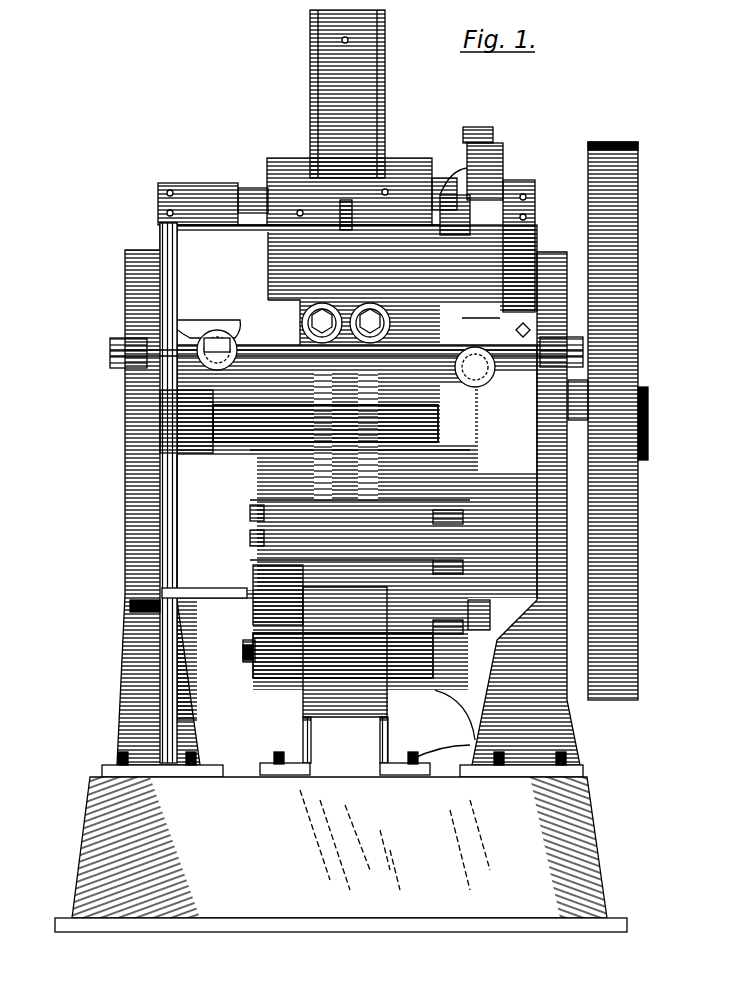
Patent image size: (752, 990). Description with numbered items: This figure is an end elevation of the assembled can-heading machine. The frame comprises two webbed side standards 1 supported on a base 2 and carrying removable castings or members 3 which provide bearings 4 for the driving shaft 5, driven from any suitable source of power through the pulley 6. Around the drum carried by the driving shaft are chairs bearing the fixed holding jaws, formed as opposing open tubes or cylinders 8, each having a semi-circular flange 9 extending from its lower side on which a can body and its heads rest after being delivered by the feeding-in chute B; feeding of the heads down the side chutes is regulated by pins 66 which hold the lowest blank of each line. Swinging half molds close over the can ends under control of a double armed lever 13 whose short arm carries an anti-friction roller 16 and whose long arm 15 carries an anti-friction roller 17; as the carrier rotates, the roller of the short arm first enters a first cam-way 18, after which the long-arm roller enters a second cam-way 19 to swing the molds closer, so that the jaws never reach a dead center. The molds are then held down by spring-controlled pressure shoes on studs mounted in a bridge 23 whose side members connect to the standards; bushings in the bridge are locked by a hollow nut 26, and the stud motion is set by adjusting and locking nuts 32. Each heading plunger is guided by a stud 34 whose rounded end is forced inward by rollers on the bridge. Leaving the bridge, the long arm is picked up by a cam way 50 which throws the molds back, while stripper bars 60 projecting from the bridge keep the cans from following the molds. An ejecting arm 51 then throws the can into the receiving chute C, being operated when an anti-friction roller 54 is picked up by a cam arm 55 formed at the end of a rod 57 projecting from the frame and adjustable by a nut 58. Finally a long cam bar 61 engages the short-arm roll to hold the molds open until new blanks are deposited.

The side standards 1 is at (122, 690).
The base 2 is at (560, 812).
The castings or members 3 is at (560, 510).
The bearings 4 is at (205, 458).
The driving shaft 5 is at (580, 382).
The pulley 6 is at (640, 178).
The tubes or cylinders 8 is at (405, 168).
The semi-circular flange 9 is at (305, 213).
The double armed lever 13 is at (416, 540).
The long arm 15 is at (425, 562).
The anti-friction roller 16 is at (462, 134).
The anti-friction roller 17 is at (424, 762).
The first cam-way 18 is at (505, 155).
The second cam-way 19 is at (520, 245).
The bridge 23 is at (248, 318).
The hollow nut 26 is at (272, 300).
The adjusting and locking nuts 32 is at (318, 305).
The stud 34 is at (262, 650).
The cam way 50 is at (545, 432).
The ejecting arm 51 is at (268, 600).
The anti-friction roller 54 is at (252, 500).
The cam arm 55 is at (258, 514).
The rod 57 is at (215, 598).
The nut 58 is at (140, 608).
The stripper bars 60 is at (335, 426).
The long cam bar 61 is at (490, 618).
The pins 66 is at (345, 205).
The feeding-in chute B is at (302, 52).
The receiving chute C is at (396, 707).